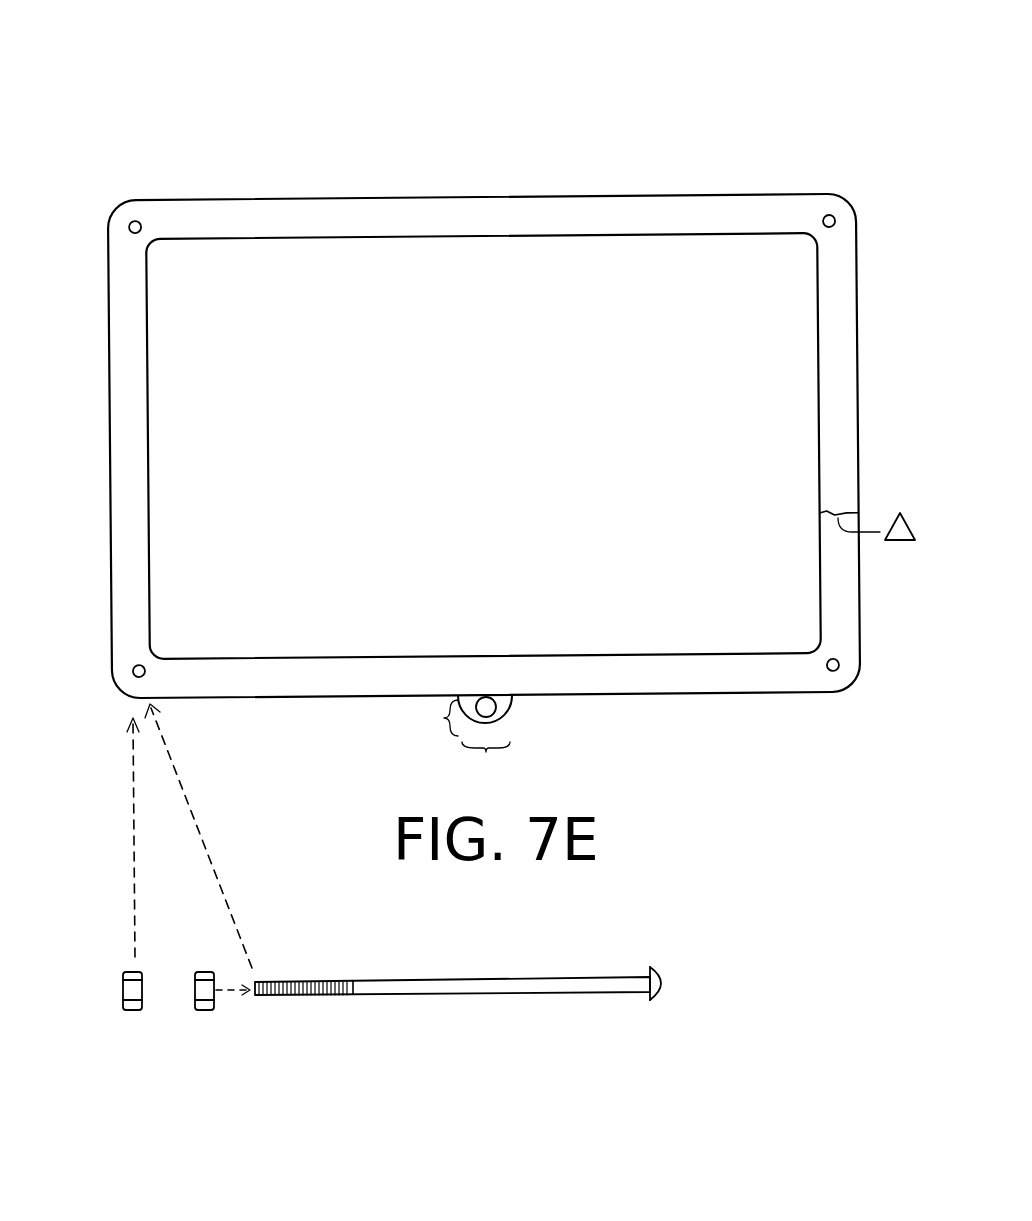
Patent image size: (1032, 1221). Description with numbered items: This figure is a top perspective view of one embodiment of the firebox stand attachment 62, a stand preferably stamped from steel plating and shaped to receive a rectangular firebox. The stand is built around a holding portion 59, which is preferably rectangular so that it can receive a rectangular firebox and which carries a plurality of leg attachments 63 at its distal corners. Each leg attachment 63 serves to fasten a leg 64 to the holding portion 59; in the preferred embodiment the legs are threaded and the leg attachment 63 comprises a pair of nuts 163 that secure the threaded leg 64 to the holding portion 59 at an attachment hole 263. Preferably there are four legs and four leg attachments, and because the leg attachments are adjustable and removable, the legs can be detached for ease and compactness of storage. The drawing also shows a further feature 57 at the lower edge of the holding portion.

The firebox stand attachment 62 is at (468, 116).
The attachment hole 263 is at (134, 222).
The holding portion 59 is at (851, 389).
The tab hole 57 is at (490, 712).
The leg attachment 63 is at (154, 1090).
The nuts 163 is at (133, 1015).
The leg 64 is at (507, 995).